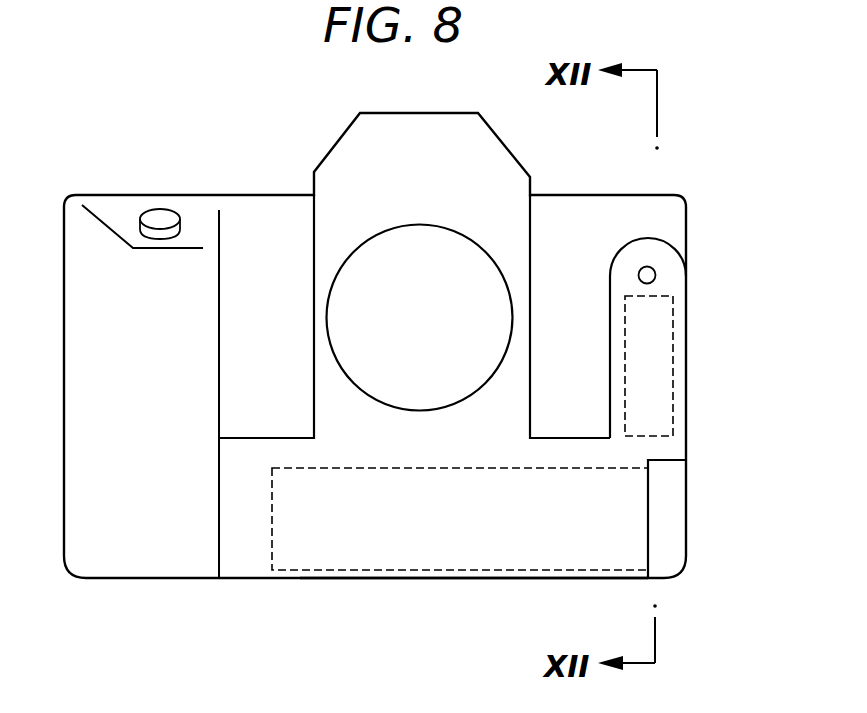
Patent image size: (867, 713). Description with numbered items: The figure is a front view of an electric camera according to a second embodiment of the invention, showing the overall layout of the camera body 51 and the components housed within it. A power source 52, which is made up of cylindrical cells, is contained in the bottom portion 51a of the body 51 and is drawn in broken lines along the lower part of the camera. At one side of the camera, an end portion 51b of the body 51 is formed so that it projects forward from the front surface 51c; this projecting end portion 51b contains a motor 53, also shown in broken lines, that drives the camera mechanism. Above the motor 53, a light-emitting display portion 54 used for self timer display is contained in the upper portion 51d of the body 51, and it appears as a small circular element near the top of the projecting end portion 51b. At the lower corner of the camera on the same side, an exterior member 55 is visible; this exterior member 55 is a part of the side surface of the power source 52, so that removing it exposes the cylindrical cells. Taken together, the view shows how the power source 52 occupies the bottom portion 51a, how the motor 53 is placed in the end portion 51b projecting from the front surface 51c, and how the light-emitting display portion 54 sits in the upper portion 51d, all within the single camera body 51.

The body 51 is at (587, 210).
The bottom portion 51a is at (485, 579).
The end portion 51b is at (677, 288).
The front surface 51c is at (594, 400).
The upper portion 51d is at (668, 258).
The power source 52 is at (520, 572).
The motor 53 is at (672, 362).
The light-emitting display portion 54 is at (656, 275).
The exterior member 55 is at (672, 533).